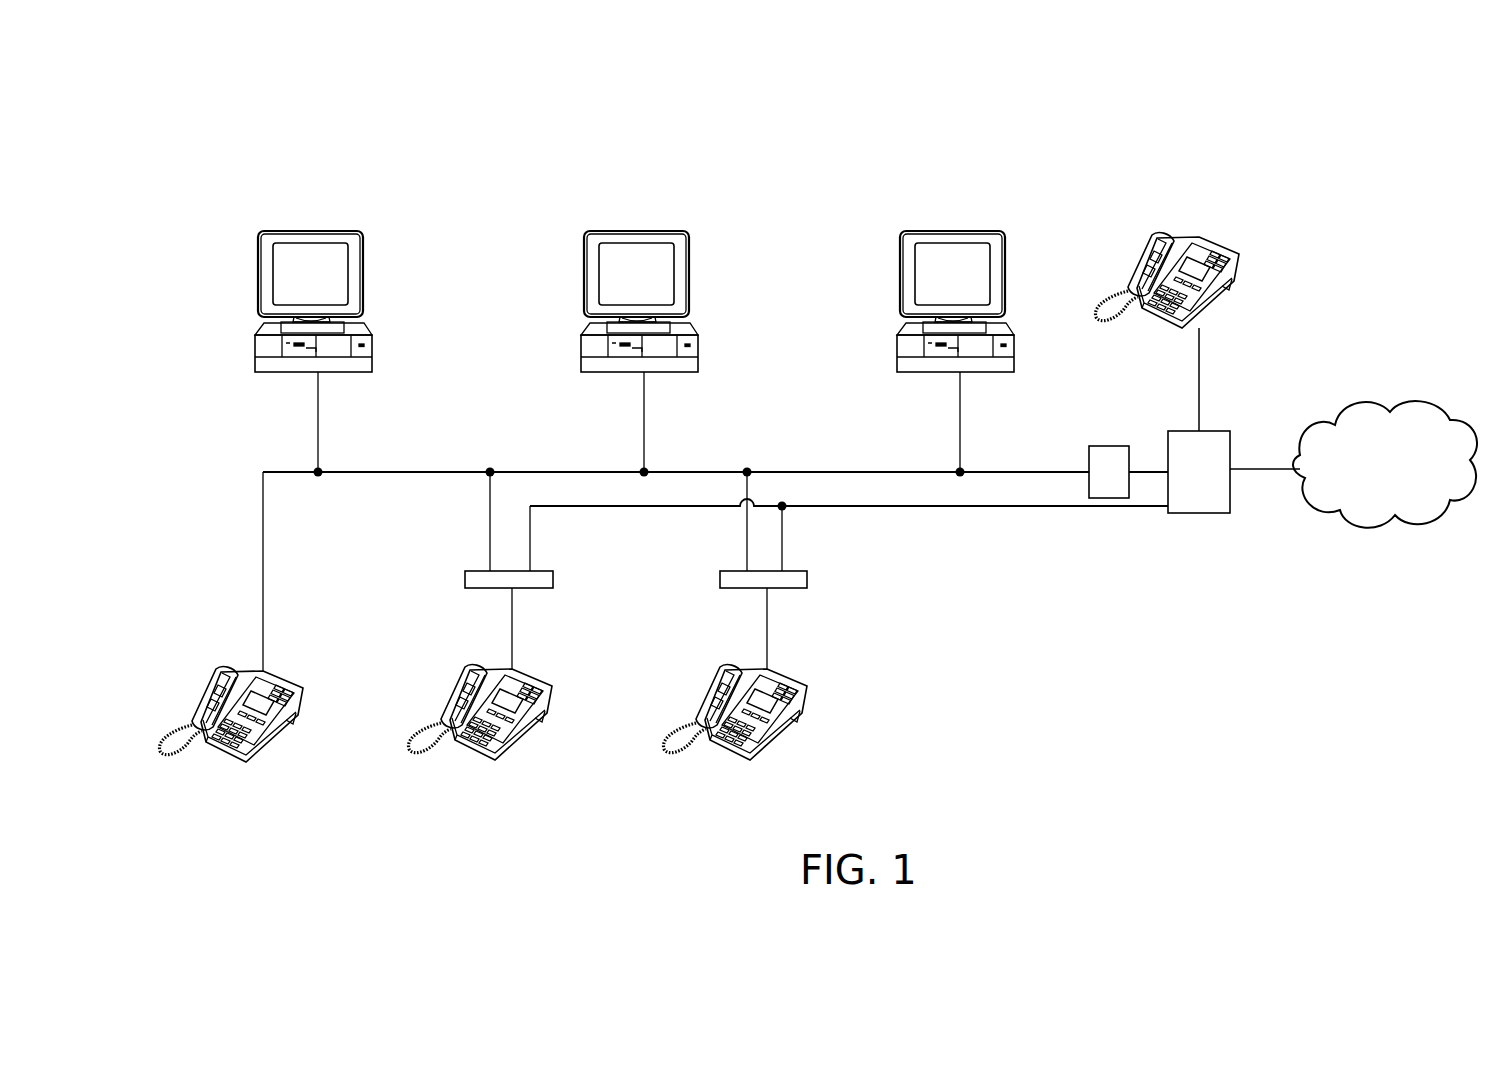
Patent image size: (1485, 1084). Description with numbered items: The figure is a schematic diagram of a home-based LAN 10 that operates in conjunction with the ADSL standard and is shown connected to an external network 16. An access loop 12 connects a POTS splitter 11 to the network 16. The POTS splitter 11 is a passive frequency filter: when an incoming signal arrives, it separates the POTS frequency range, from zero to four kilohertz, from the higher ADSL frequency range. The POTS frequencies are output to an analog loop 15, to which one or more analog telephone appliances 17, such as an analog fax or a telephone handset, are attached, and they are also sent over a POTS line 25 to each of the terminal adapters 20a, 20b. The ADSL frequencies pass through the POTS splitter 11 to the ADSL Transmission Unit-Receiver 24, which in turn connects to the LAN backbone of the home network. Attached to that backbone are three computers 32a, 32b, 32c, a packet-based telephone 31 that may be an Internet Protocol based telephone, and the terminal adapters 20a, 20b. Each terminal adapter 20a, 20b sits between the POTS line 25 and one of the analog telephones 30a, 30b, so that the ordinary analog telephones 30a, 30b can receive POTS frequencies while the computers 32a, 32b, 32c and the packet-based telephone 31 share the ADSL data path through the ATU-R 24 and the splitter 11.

The home-based LAN 10 is at (356, 92).
The POTS splitter 11 is at (1212, 483).
The access loop 12 is at (1258, 470).
The analog loop 15 is at (1199, 360).
The network 16 is at (1404, 495).
The analog telephone appliance 17 is at (1202, 238).
The terminal adapter 20a is at (807, 578).
The terminal adapter 20b is at (553, 578).
The ADSL Transmission Unit-Receiver (ATU-R) 24 is at (1122, 483).
The POTS line 25 is at (930, 507).
The analog telephone 30a is at (731, 756).
The analog telephone 30b is at (476, 756).
The packet-based telephone 31 is at (222, 758).
The computer 32a is at (309, 231).
The computer 32b is at (635, 231).
The computer 32c is at (949, 231).